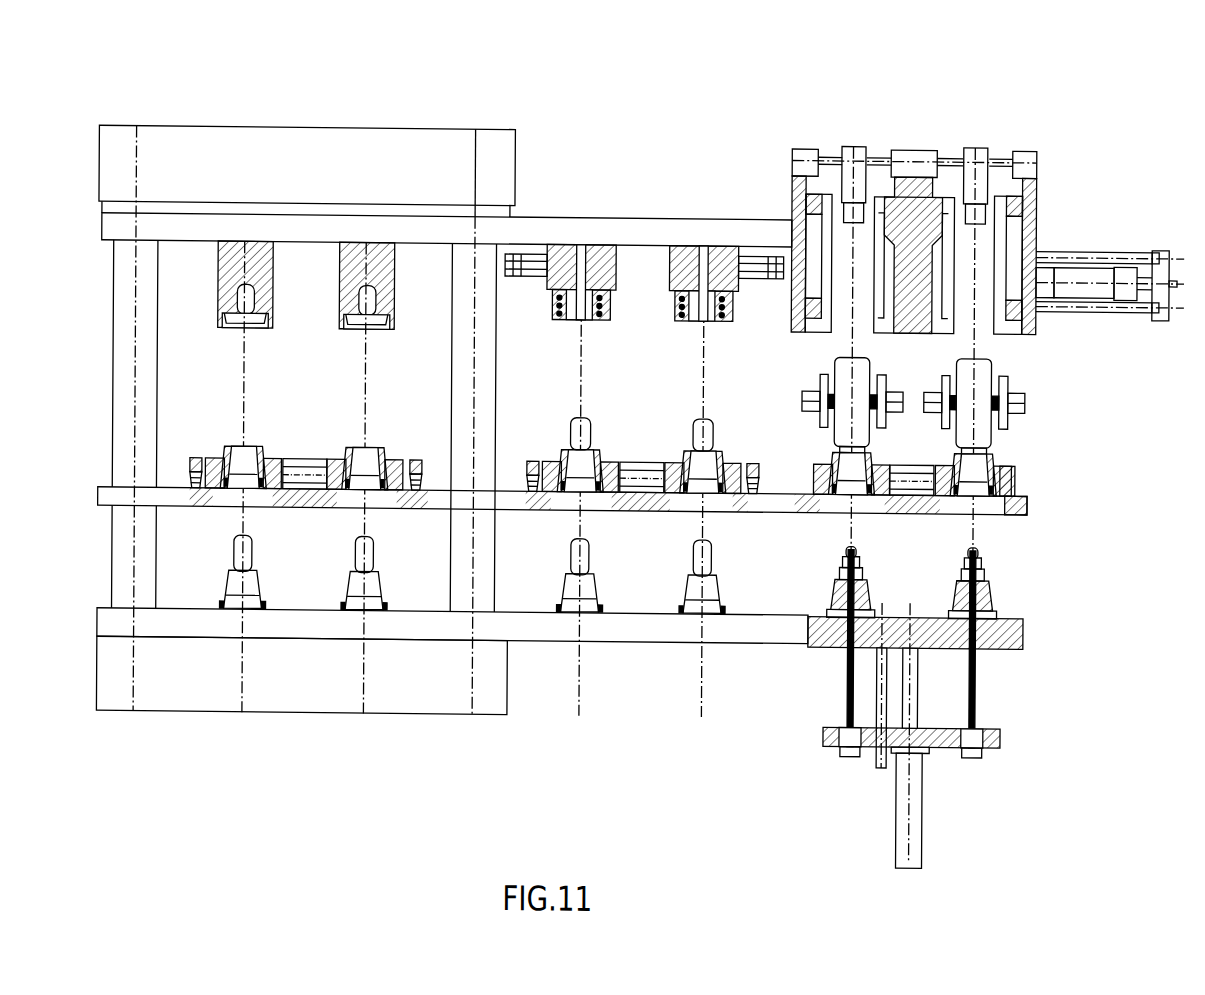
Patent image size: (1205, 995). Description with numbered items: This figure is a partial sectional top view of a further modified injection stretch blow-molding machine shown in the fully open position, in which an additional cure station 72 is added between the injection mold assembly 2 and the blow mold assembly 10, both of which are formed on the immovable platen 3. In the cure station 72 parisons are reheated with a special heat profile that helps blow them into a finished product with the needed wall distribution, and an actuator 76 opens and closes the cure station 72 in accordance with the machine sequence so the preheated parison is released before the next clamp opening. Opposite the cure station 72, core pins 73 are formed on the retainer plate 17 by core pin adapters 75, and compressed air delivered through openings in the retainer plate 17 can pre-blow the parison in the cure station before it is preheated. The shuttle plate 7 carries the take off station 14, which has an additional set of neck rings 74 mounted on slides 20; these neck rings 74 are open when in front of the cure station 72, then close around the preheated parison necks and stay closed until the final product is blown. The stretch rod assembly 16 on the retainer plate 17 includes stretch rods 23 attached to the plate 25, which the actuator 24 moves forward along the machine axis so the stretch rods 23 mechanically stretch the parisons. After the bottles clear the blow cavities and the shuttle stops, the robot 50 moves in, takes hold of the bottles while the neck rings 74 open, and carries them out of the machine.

The injection mold 2 is at (380, 245).
The immovable platen 3 is at (490, 143).
The shuttle plate 7 is at (1027, 500).
The blow mold assembly 10 is at (906, 160).
The take-off station 14 is at (1015, 473).
The stretch rod assembly 16 is at (1003, 726).
The retainer plate 17 is at (1025, 618).
The slides 20 is at (1017, 483).
The stretch rods 23 is at (976, 674).
The actuator 24 is at (904, 794).
The plate 25 is at (1003, 742).
The robot 50 is at (1025, 388).
The cure station 72 is at (722, 245).
The core pins 73 is at (578, 558).
The neck rings 74 is at (996, 458).
The core pin adapters 75 is at (707, 609).
The actuator 76 is at (766, 265).